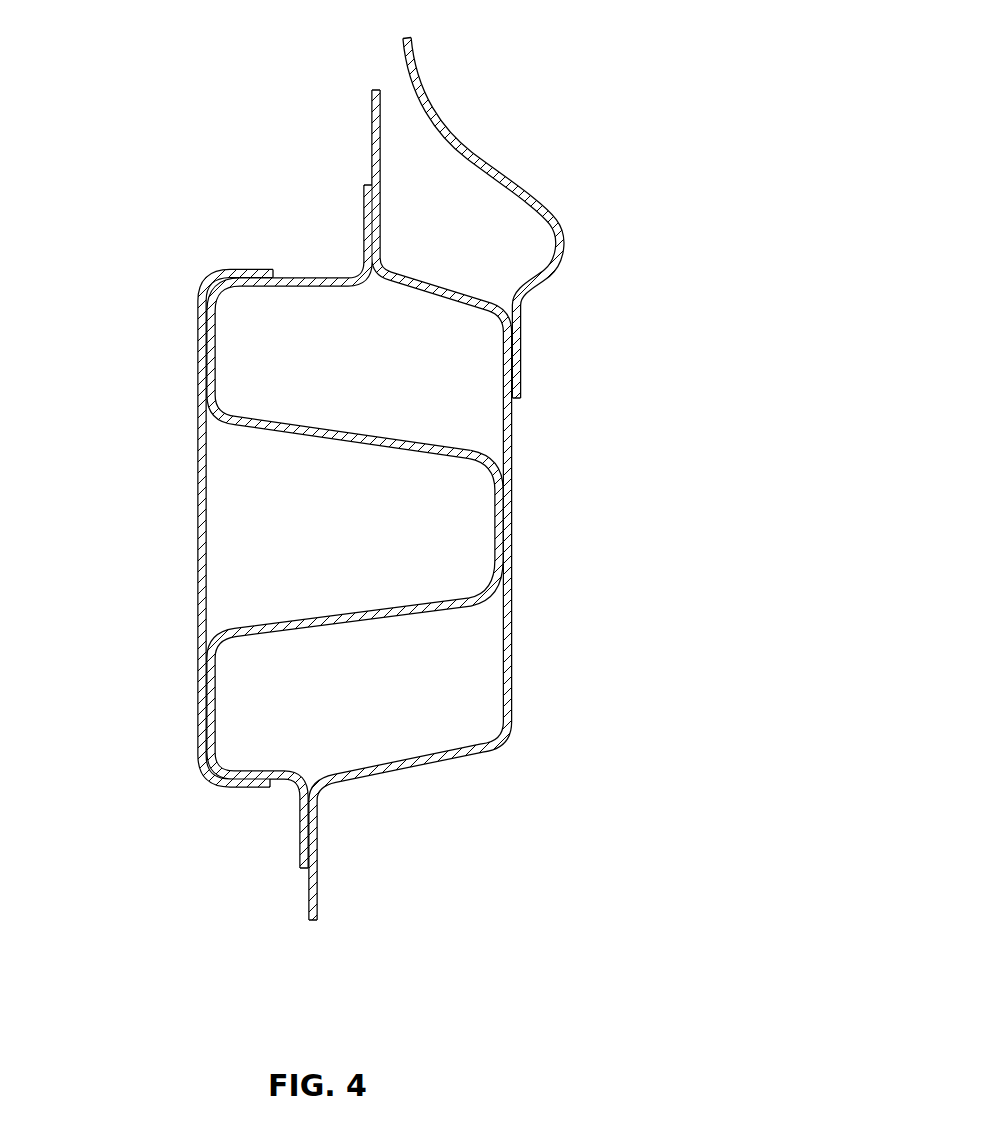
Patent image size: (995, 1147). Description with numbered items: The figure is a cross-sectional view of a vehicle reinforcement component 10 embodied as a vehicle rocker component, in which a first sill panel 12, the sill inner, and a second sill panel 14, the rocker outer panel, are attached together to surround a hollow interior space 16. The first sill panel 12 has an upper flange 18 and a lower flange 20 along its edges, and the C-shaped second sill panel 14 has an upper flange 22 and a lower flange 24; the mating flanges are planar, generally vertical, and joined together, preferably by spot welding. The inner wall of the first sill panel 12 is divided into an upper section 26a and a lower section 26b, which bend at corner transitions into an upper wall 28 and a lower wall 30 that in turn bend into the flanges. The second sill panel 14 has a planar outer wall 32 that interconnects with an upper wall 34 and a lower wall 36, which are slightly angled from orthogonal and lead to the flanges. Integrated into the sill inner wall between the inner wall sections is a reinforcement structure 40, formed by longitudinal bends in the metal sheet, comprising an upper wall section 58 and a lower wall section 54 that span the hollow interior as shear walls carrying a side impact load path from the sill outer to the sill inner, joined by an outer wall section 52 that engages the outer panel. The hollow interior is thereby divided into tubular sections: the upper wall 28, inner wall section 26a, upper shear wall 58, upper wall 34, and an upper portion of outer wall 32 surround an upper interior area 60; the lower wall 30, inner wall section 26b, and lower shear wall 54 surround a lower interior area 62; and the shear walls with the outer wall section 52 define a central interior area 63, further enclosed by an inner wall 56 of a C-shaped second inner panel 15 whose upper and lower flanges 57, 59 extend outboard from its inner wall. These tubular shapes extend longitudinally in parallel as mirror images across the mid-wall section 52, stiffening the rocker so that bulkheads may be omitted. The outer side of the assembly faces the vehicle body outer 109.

The vehicle reinforcement component 10 is at (642, 136).
The vehicle body outer 109 is at (480, 156).
The upper flange 22 is at (382, 110).
The upper flange 18 is at (363, 208).
The upper wall 28 is at (303, 277).
The upper flange 57 is at (233, 272).
The upper wall 34 is at (423, 283).
The hollow interior space 16 is at (472, 359).
The upper section of inner wall 26a is at (215, 335).
The upper interior area 60 is at (375, 378).
The upper wall section 58 is at (368, 435).
The reinforcement structure 40 is at (472, 448).
The second inner panel 15 is at (197, 447).
The inner wall 56 is at (197, 505).
The central interior area 63 is at (375, 543).
The outer wall section 52 is at (495, 508).
The outer wall 32 is at (513, 530).
The first sill panel 12 is at (212, 628).
The lower wall section 54 is at (385, 615).
The lower section of inner wall 26b is at (213, 687).
The lower interior area 62 is at (375, 704).
The second sill panel 14 is at (516, 679).
The lower wall 30 is at (253, 768).
The lower wall 36 is at (433, 767).
The lower flange 59 is at (240, 792).
The lower flange 20 is at (302, 835).
The lower flange 24 is at (318, 845).